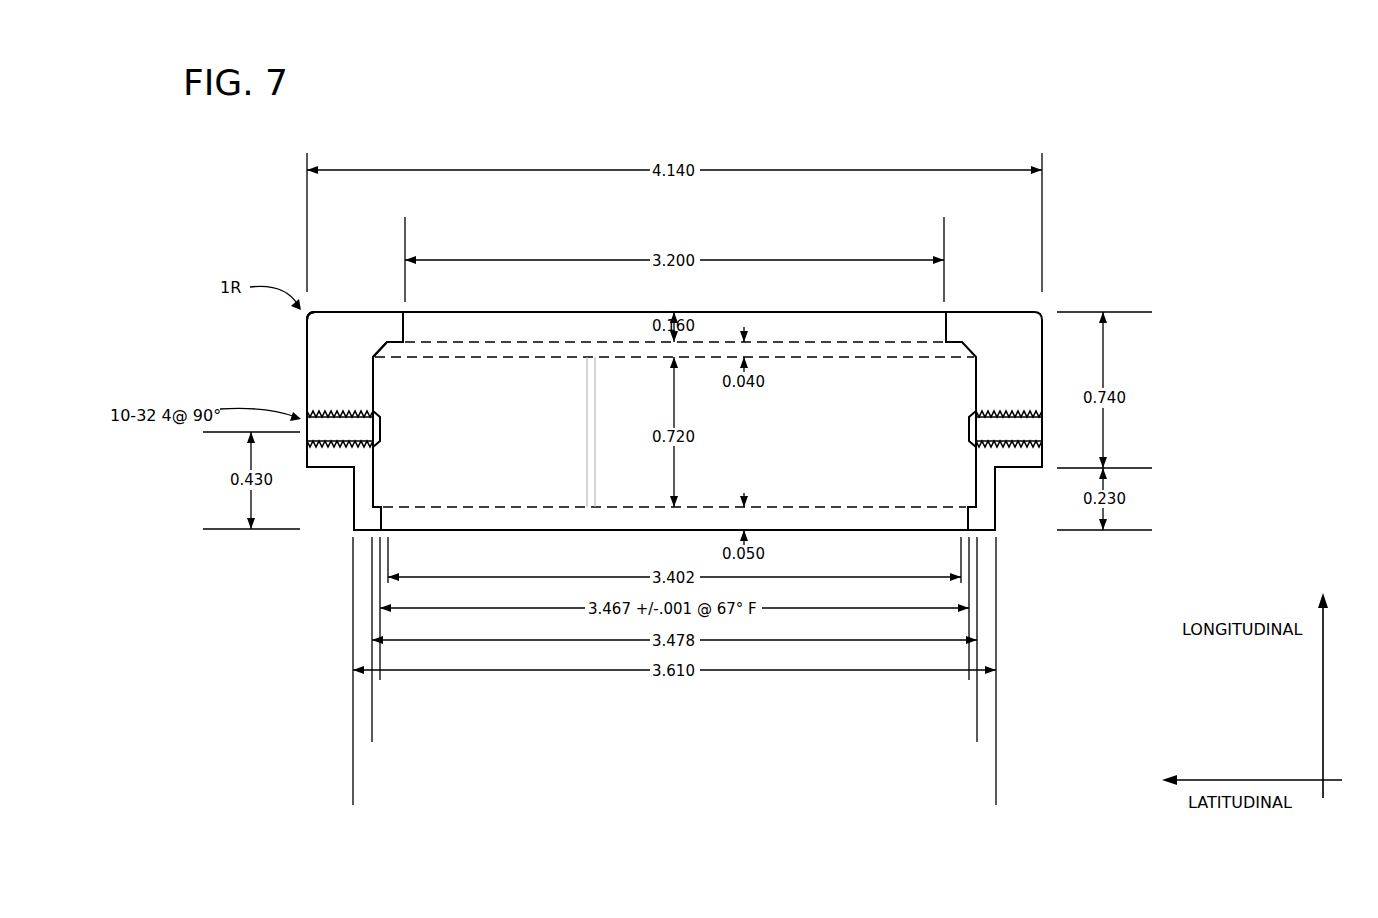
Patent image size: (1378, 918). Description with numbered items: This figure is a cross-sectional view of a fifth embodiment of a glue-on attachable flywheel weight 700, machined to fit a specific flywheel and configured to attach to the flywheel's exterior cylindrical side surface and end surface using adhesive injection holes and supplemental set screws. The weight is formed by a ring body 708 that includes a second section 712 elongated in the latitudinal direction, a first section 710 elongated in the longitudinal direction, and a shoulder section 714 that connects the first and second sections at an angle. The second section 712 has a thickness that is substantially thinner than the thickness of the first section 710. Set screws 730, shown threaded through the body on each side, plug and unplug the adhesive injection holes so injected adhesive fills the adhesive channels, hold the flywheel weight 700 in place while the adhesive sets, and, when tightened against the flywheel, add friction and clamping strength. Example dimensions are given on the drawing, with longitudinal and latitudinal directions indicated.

The glue-on attachable flywheel weight 700 is at (941, 90).
The ring body 708 is at (556, 311).
The first section 710 is at (306, 372).
The second section 712 is at (350, 308).
The shoulder section 714 is at (306, 325).
The set screws 730 is at (382, 432).